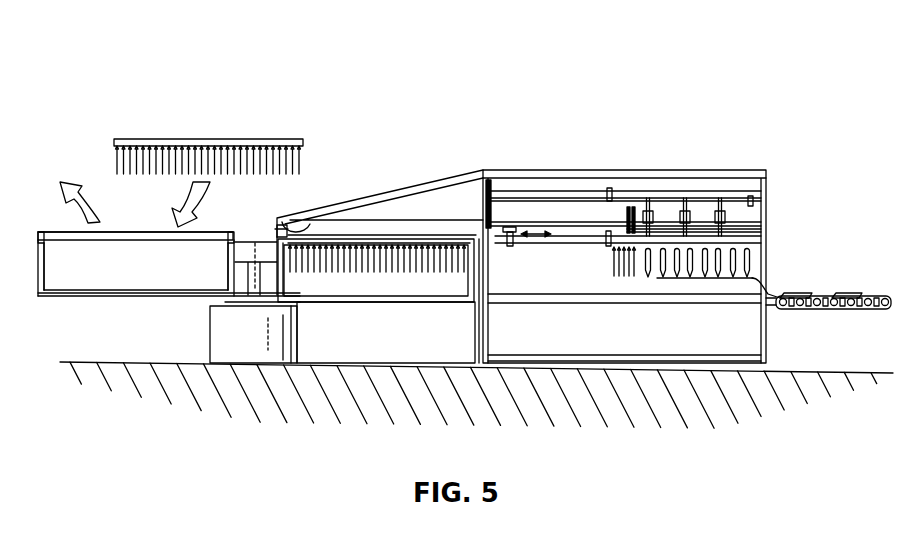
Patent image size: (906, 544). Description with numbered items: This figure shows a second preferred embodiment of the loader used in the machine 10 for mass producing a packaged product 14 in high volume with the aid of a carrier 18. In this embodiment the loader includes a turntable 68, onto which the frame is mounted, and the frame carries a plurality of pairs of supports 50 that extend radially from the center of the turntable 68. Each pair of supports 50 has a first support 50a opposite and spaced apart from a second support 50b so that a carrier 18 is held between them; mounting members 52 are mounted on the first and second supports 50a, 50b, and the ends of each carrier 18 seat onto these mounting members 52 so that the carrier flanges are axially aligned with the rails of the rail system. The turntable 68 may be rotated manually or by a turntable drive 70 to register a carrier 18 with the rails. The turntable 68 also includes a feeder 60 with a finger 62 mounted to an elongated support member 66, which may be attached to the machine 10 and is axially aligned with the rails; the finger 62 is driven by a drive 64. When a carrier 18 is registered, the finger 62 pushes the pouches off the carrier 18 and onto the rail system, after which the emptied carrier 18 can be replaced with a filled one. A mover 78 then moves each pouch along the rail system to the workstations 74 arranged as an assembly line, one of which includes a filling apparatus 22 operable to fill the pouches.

The machine 10 is at (399, 64).
The packaged product 14 is at (838, 293).
The carrier 18 is at (215, 139).
The filling apparatus 22 is at (650, 215).
The pairs of supports 50 is at (159, 265).
The first support 50a is at (46, 257).
The second support 50b is at (228, 256).
The mounting members 52 is at (40, 232).
The feeder 60 is at (274, 210).
The finger 62 is at (280, 230).
The drive 64 is at (309, 226).
The support member 66 is at (426, 218).
The turntable 68 is at (368, 303).
The turntable drive 70 is at (262, 337).
The workstations 74 is at (728, 222).
The mover 78 is at (512, 244).